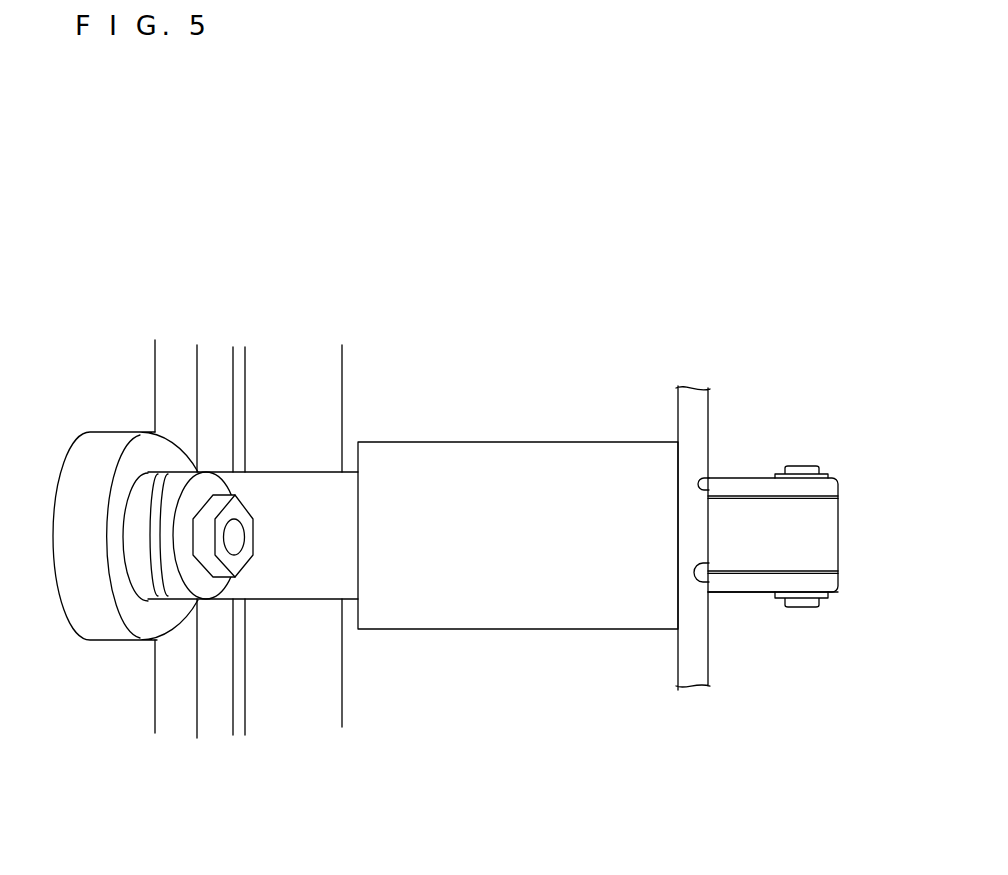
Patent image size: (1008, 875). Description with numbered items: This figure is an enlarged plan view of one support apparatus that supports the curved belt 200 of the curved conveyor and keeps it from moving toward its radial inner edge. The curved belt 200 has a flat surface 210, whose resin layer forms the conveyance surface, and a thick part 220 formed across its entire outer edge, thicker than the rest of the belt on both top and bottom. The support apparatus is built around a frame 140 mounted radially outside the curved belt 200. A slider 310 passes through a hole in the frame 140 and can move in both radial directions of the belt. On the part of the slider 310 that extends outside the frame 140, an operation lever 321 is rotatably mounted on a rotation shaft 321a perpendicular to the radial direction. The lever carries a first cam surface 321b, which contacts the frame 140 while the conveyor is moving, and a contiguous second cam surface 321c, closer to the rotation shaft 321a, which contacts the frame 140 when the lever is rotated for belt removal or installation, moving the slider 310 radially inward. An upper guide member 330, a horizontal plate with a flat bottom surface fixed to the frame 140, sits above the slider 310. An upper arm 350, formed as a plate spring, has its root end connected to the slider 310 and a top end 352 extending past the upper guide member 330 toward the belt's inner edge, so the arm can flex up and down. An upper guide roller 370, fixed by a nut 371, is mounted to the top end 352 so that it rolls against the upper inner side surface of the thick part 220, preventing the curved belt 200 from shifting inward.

The frame 140 is at (708, 427).
The curved belt 200 is at (225, 607).
The flat surface 210 is at (130, 727).
The thick part 220 is at (213, 728).
The slider 310 is at (838, 562).
The operation lever 321 is at (736, 596).
The rotation shaft 321a is at (803, 608).
The first cam surface 321b is at (710, 555).
The second cam surface 321c is at (838, 525).
The upper guide member 330 is at (537, 487).
The upper arm 350 is at (312, 502).
The top end 352 is at (153, 517).
The upper guide roller 370 is at (75, 507).
The nut 371 is at (247, 503).